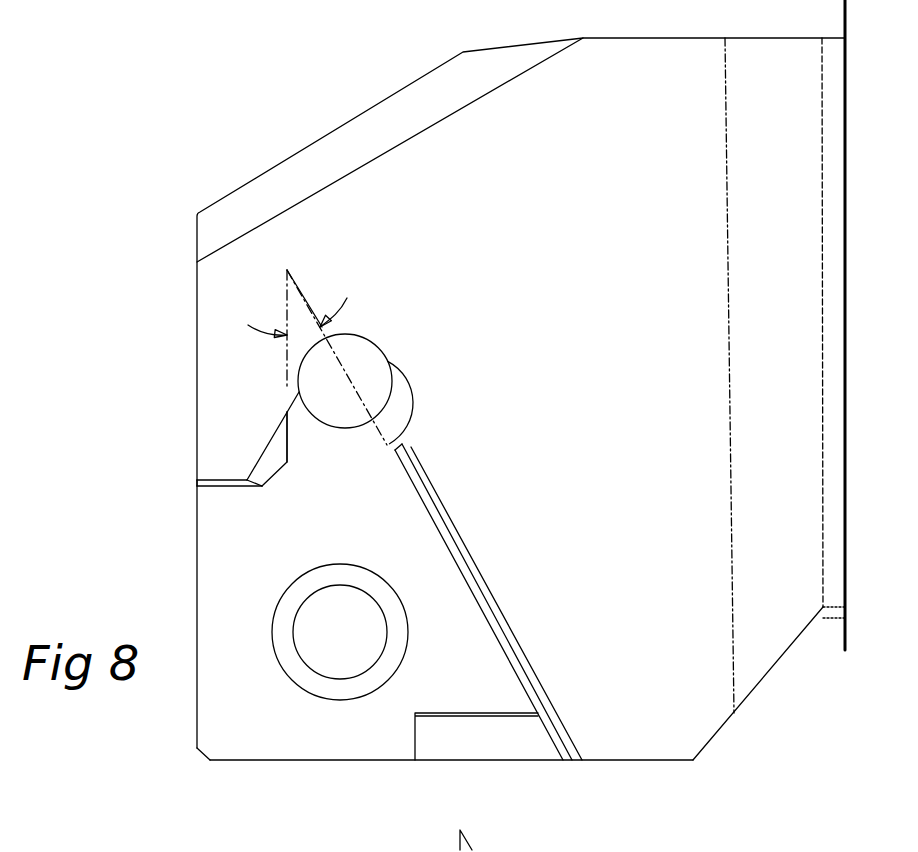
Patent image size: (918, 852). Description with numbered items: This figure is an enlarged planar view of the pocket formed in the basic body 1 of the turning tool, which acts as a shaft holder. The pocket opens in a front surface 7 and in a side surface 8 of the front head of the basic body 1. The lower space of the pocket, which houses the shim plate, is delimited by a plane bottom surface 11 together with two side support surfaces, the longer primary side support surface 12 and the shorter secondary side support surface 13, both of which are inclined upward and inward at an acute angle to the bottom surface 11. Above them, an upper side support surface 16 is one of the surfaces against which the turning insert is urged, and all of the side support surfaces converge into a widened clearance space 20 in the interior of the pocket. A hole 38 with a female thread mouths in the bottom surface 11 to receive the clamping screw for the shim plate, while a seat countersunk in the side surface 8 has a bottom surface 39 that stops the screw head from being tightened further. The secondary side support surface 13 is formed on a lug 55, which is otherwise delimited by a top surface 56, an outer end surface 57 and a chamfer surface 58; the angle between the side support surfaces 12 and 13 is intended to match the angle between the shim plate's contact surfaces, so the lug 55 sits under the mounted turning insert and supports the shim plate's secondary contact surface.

The basic body 1 is at (157, 420).
The front surface 7 is at (197, 605).
The side surface 8 is at (275, 762).
The bottom surface 11 is at (446, 615).
The primary side support surface 12 is at (404, 475).
The secondary side support surface 13 is at (288, 432).
The upper side support surface 16 is at (478, 595).
The clearance space 20 is at (348, 361).
The hole 38 is at (331, 651).
The bottom surface of seat 39 is at (493, 717).
The lug 55 is at (272, 490).
The top surface 56 is at (272, 458).
The outer end surface 57 is at (228, 488).
The chamfer surface 58 is at (275, 472).